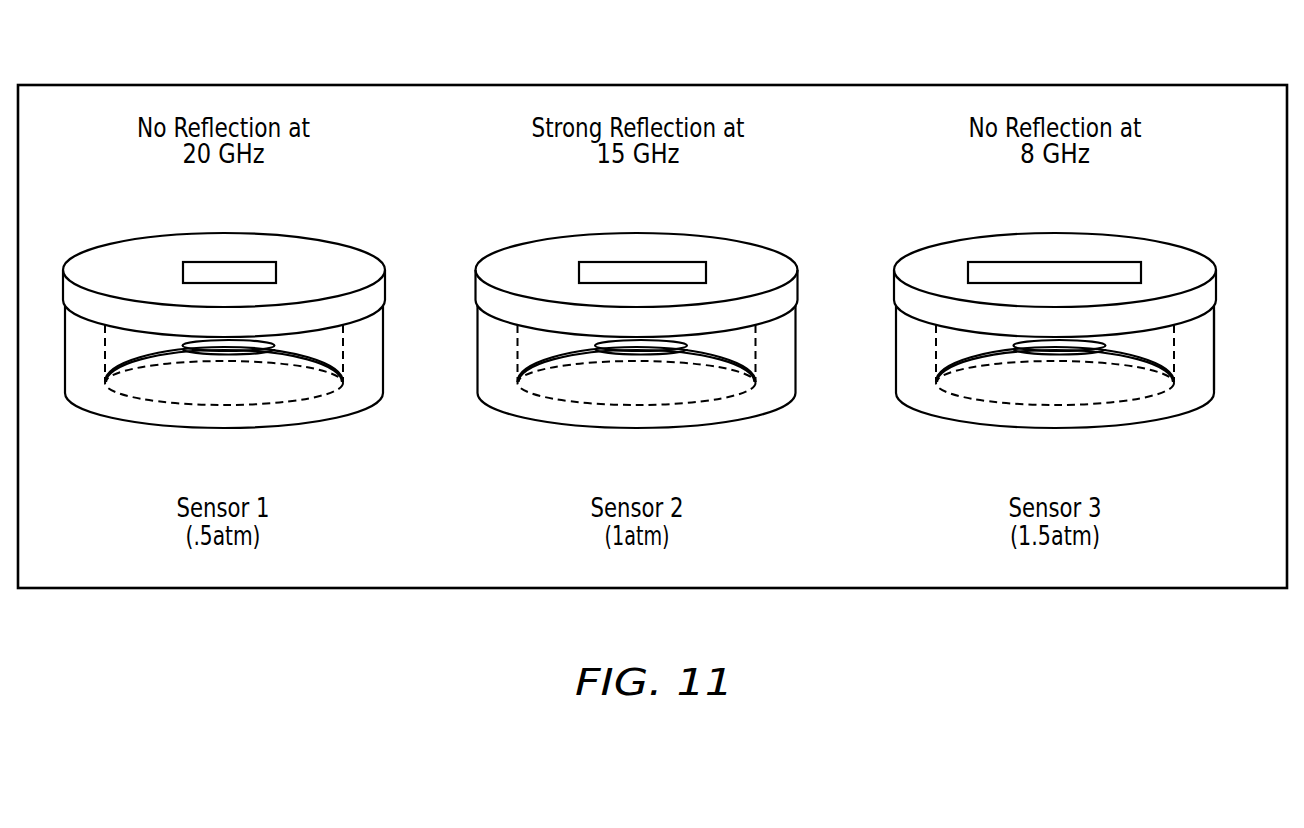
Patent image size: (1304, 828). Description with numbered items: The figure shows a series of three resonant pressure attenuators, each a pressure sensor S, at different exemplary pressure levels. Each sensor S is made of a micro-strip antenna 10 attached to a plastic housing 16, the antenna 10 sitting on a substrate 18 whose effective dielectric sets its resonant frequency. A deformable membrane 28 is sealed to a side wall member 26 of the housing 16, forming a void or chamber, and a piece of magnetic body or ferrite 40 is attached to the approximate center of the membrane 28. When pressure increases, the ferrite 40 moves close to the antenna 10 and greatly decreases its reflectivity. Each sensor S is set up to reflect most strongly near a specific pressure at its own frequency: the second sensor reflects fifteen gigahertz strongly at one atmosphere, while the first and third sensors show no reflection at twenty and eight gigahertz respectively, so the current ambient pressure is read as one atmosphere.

The antenna member 10 is at (259, 268).
The housing member 16 is at (367, 245).
The substrate 18 is at (112, 262).
The side wall member 26 is at (1200, 355).
The membrane 28 is at (133, 370).
The ferrite 40 is at (228, 353).
The pressure sensor S is at (85, 433).